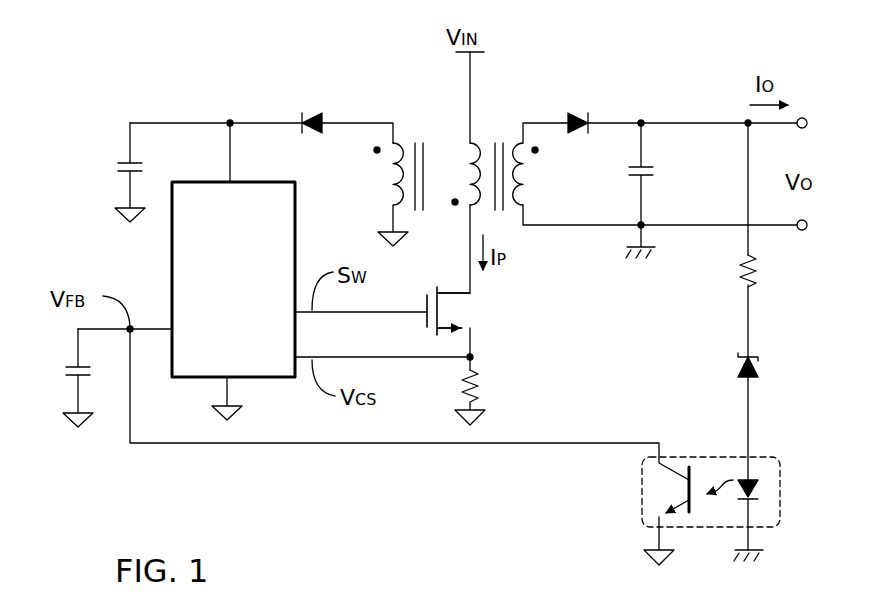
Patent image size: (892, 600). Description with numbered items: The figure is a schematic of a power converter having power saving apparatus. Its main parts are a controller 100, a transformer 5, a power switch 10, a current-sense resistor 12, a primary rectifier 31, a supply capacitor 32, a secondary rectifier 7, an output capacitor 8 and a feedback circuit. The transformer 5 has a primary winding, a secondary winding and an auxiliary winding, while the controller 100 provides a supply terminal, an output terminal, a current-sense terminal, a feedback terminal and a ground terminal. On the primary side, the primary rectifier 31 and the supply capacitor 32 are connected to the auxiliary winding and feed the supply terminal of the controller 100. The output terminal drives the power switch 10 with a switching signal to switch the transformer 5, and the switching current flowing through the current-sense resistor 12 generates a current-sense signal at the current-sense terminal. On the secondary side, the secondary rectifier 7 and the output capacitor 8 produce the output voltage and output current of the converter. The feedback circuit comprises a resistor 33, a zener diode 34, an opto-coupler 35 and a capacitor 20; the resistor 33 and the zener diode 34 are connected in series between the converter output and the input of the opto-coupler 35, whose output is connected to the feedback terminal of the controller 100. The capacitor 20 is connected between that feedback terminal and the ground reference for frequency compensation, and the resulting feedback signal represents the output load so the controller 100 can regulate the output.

The transformer 5 is at (497, 138).
The secondary rectifier 7 is at (582, 110).
The output capacitor 8 is at (655, 170).
The power switch 10 is at (470, 310).
The current-sense resistor 12 is at (480, 385).
The capacitor 20 is at (66, 370).
The primary rectifier 31 is at (308, 112).
The supply capacitor 32 is at (113, 167).
The resistor 33 is at (757, 272).
The zener diode 34 is at (765, 370).
The opto-coupler 35 is at (783, 493).
The controller 100 is at (170, 300).